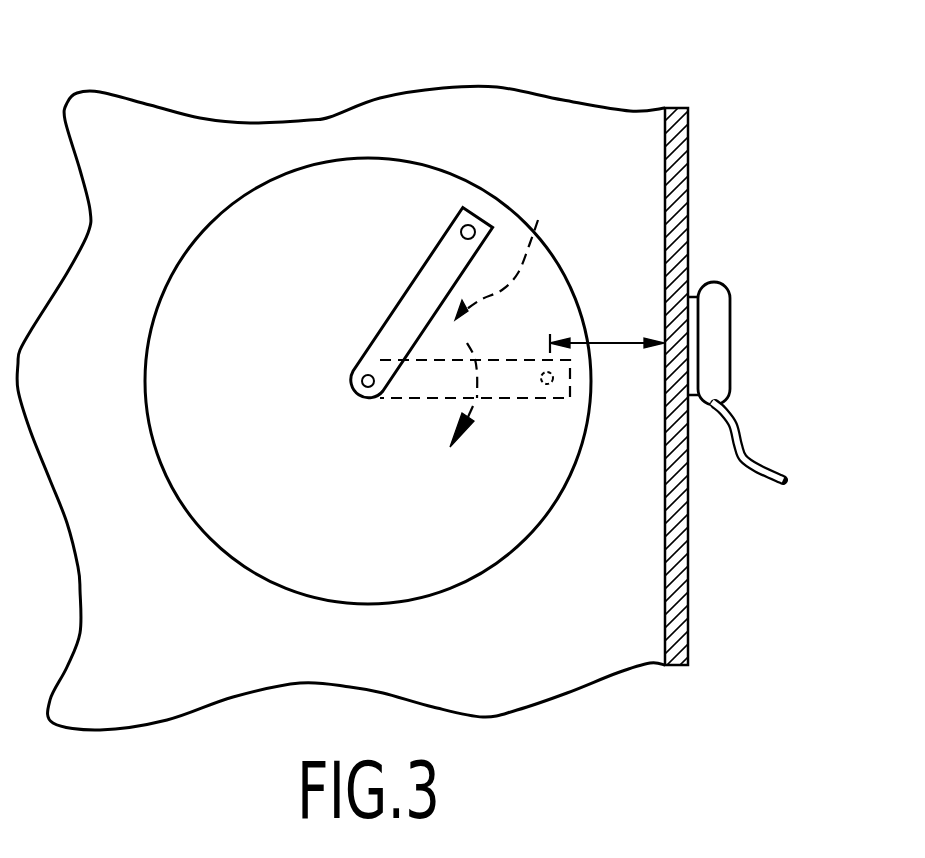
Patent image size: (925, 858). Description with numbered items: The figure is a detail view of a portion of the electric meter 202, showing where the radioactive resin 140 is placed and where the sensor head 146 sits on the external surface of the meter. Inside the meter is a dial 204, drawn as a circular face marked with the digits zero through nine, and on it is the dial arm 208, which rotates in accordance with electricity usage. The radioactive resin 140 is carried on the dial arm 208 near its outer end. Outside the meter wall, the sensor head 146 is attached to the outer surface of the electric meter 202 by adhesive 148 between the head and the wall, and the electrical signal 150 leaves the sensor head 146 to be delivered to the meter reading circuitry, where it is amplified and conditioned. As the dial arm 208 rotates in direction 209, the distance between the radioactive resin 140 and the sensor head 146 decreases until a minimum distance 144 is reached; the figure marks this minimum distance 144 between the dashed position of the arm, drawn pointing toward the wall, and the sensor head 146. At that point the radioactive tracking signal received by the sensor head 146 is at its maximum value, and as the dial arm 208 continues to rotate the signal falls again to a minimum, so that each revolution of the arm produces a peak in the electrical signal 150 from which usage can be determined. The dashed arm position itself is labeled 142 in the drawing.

The electric meter 202 is at (602, 657).
The dial 204 is at (210, 540).
The dial arm 208 is at (445, 233).
The radioactive resin 140 is at (468, 224).
The direction of rotation 209 is at (512, 310).
The pointer in sensing position 142 is at (497, 398).
The minimum distance 144 is at (634, 343).
The adhesive 148 is at (692, 293).
The sensor head 146 is at (715, 330).
The electrical signal 150 is at (740, 445).